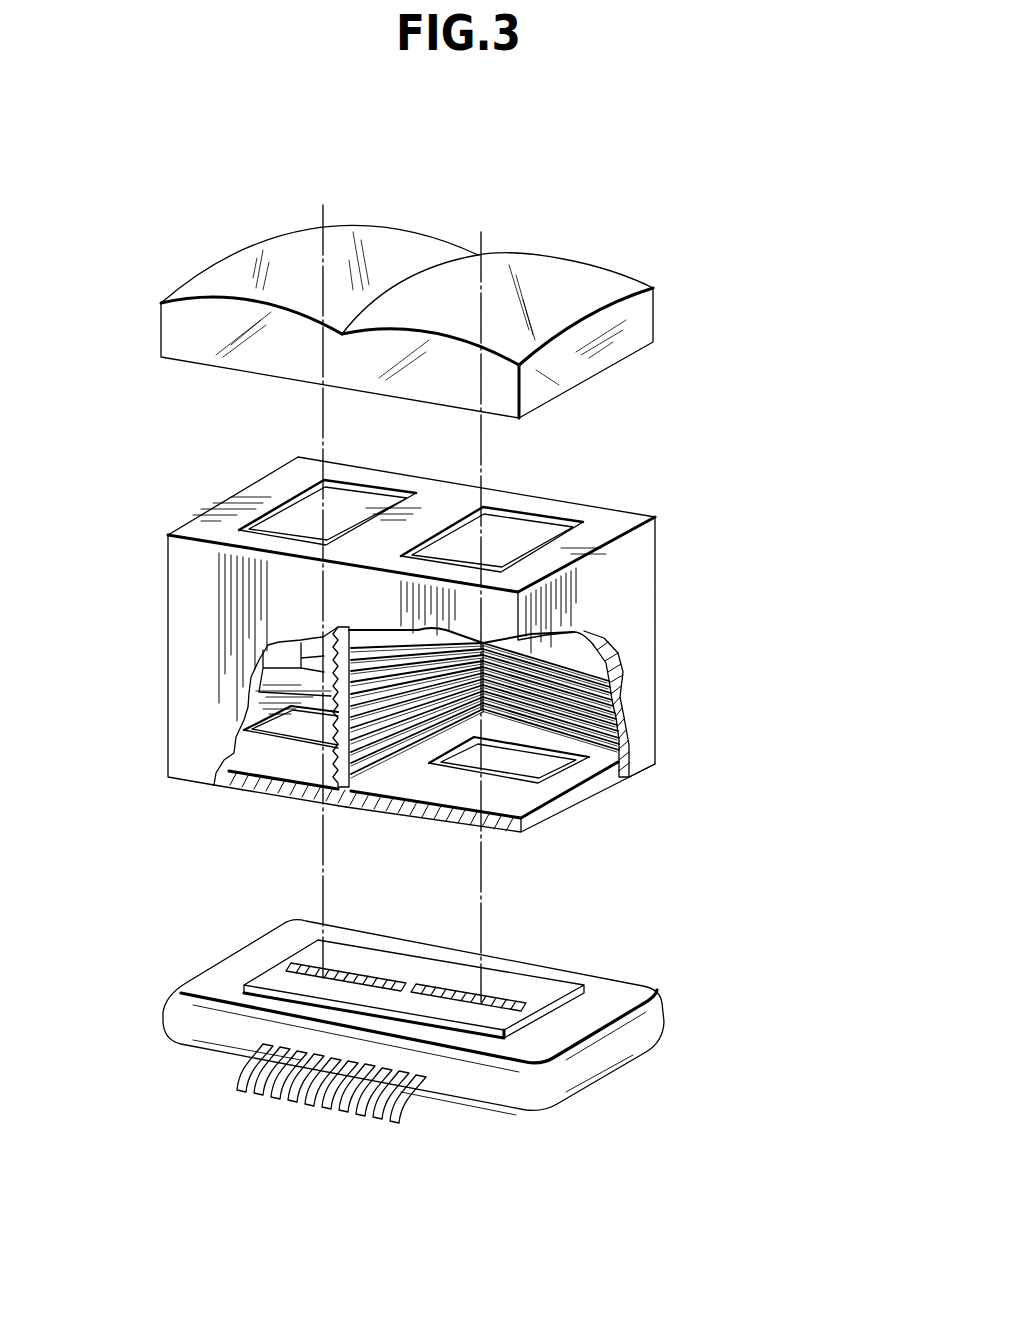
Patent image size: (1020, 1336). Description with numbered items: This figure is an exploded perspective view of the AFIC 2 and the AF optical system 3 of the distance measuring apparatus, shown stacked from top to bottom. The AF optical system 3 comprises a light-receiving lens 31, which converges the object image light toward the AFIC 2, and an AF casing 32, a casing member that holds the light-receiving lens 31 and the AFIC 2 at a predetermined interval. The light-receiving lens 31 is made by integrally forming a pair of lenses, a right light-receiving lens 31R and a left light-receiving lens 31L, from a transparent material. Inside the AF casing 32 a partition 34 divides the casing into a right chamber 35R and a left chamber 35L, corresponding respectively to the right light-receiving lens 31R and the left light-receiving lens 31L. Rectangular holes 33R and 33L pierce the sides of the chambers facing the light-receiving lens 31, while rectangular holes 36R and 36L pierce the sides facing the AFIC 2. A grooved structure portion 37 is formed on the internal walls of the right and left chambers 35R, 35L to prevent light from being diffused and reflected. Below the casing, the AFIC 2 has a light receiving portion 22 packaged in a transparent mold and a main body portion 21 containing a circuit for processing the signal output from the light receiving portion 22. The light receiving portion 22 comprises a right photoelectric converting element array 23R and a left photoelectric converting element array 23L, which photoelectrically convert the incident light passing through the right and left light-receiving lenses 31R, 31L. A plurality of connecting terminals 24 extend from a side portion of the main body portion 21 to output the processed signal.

The AF optical system 3 is at (680, 280).
The light-receiving lens 31 is at (203, 265).
The left light-receiving lens 31L is at (367, 230).
The right light-receiving lens 31R is at (572, 267).
The AF casing 32 is at (166, 585).
The rectangular hole 33L is at (287, 505).
The rectangular hole 33R is at (547, 522).
The partition 34 is at (360, 768).
The left chamber 35L is at (268, 760).
The right chamber 35R is at (592, 747).
The rectangular hole 36L is at (317, 717).
The rectangular hole 36R is at (542, 755).
The grooved structure portion 37 is at (398, 703).
The AFIC 2 is at (610, 1040).
The main body portion 21 is at (180, 1022).
The light receiving portion 22 is at (438, 973).
The left photoelectric converting element array 23L is at (313, 963).
The right photoelectric converting element array 23R is at (510, 998).
The connecting terminals 24 is at (323, 1100).